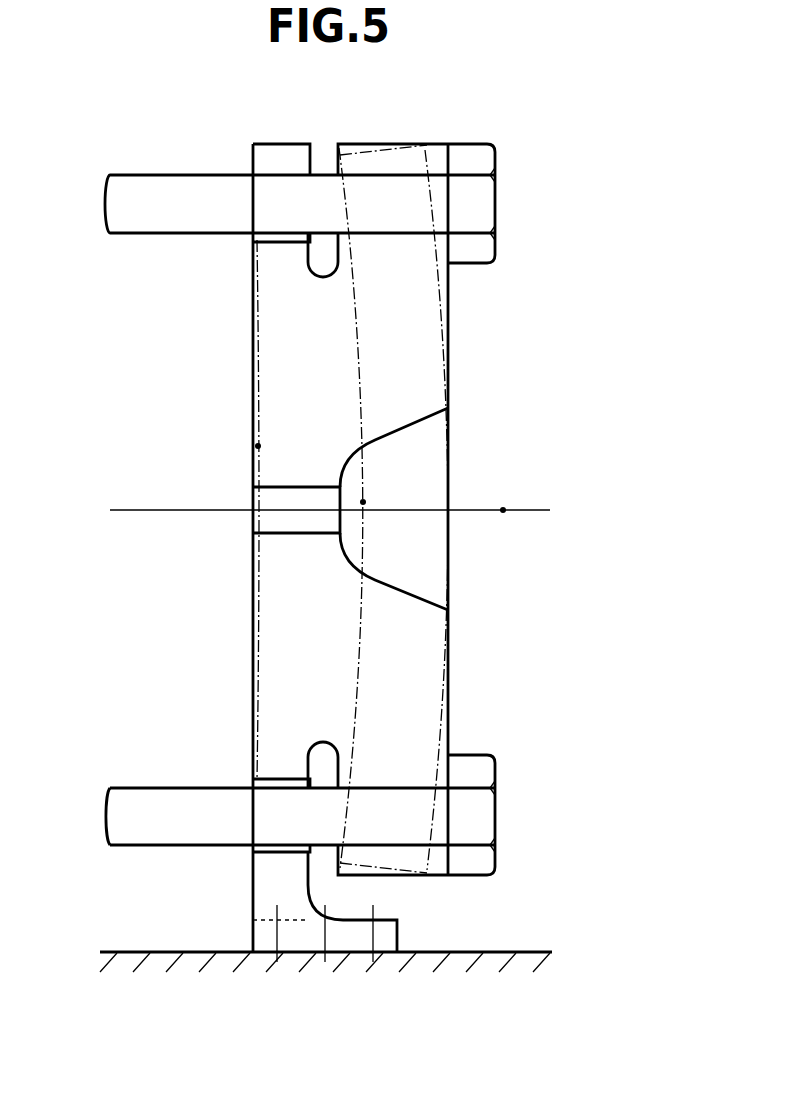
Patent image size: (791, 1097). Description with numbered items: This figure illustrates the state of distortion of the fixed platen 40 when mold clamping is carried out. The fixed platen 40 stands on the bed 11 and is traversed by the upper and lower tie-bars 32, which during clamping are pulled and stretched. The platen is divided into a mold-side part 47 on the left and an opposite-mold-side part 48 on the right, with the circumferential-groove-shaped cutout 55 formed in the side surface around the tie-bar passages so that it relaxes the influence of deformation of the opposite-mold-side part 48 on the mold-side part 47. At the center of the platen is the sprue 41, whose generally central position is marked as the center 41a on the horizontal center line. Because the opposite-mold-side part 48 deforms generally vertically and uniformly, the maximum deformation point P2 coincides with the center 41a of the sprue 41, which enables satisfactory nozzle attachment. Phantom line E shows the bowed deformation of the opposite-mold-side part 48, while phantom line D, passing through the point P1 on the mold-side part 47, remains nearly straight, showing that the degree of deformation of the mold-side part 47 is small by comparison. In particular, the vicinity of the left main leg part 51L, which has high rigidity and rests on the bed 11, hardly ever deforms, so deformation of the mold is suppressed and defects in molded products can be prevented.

The fixed platen 40 is at (526, 91).
The tie-bars 32 is at (138, 213).
The cutout 55 is at (323, 258).
The mold-side part 47 is at (262, 583).
The opposite-mold-side part 48 is at (412, 706).
The sprue 41 is at (397, 430).
The center of the sprue 41a is at (503, 510).
The bed 11 is at (468, 950).
The left main leg part 51L is at (297, 942).
The phantom line D is at (253, 328).
The phantom line E is at (365, 338).
The point P1 is at (258, 446).
The maximum deformation point P2 is at (363, 502).